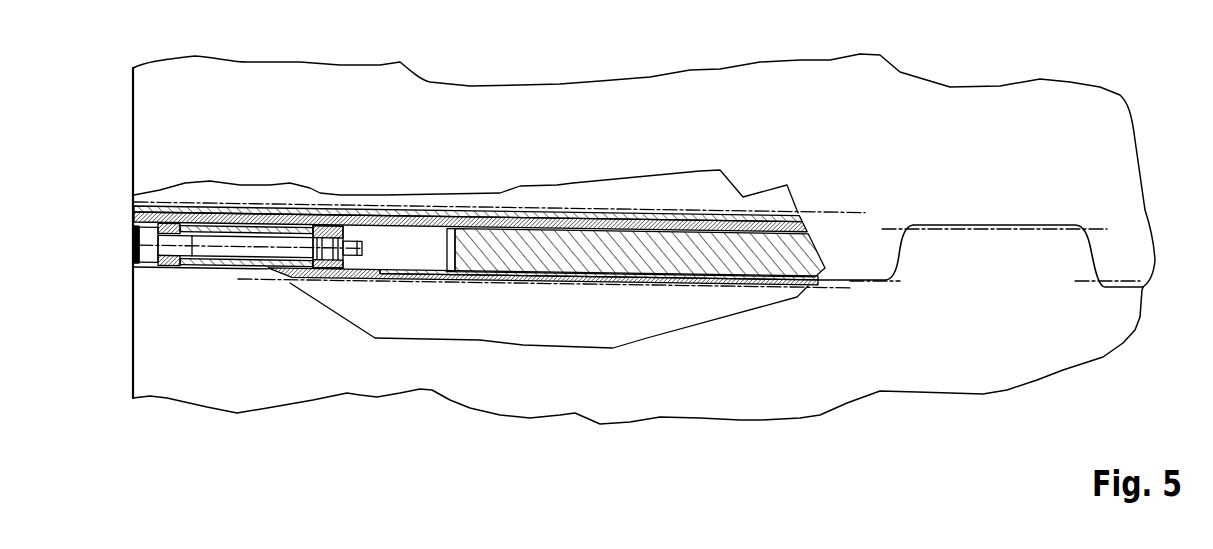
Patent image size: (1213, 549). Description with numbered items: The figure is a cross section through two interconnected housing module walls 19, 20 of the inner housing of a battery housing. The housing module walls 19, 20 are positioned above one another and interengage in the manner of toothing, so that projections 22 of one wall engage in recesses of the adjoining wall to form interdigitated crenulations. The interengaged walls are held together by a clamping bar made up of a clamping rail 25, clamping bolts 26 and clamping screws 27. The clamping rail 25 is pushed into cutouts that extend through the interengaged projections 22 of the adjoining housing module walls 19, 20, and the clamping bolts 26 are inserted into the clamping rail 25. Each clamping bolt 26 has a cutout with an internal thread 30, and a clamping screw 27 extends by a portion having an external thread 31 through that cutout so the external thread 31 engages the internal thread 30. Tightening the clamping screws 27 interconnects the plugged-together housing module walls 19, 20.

The housing module wall 19 is at (232, 95).
The housing module wall 20 is at (762, 398).
The projection 22 is at (1005, 243).
The clamping rail 25 is at (572, 248).
The clamping bolt 26 is at (203, 258).
The clamping screw 27 is at (229, 240).
The internal thread 30 is at (322, 342).
The external thread 31 is at (340, 255).